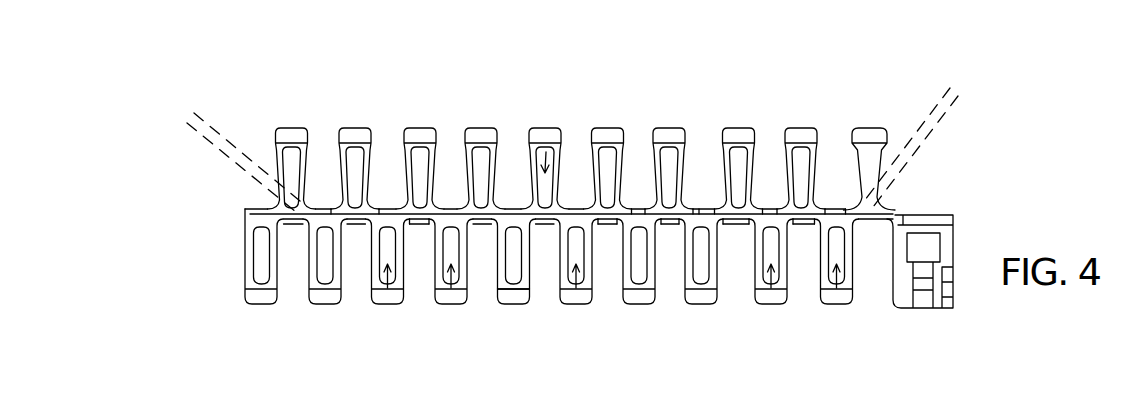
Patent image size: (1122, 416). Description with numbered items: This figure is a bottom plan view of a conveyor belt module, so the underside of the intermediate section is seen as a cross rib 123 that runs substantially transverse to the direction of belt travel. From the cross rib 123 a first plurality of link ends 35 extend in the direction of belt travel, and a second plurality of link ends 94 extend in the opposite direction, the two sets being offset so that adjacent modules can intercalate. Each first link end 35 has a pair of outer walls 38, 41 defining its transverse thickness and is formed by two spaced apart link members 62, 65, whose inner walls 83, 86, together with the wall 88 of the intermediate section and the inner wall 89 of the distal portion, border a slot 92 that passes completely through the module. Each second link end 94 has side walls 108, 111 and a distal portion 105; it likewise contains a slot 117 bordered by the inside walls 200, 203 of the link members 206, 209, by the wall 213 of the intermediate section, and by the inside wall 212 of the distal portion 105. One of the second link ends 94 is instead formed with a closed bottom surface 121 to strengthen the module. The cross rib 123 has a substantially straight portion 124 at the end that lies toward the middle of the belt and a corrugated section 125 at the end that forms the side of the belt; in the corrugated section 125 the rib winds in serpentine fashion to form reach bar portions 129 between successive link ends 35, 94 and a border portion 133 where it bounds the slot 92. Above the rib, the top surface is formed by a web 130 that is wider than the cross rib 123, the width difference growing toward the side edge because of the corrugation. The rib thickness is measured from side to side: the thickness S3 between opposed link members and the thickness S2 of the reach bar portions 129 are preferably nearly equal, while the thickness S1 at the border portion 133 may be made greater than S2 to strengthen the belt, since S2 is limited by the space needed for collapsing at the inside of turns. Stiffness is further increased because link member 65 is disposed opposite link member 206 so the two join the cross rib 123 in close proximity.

The first link ends 35 is at (323, 298).
The outer wall 38 is at (428, 224).
The outer wall 41 is at (467, 302).
The link member 62 is at (672, 226).
The link member 65 is at (654, 302).
The inner wall 83 is at (510, 304).
The inner wall 86 is at (528, 304).
The wall 88 is at (609, 224).
The inner wall 89 is at (575, 290).
The slot 92 is at (385, 289).
The second link ends 94 is at (354, 137).
The distal portion 105 is at (736, 130).
The side wall 108 is at (784, 188).
The side wall 111 is at (842, 212).
The slot 117 is at (546, 150).
The closed bottom surface 121 is at (880, 168).
The cross rib 123 is at (368, 212).
The substantially straight portion 124 is at (298, 216).
The corrugated section 125 is at (696, 208).
The reach bar portions 129 is at (738, 226).
The web 130 is at (255, 208).
The border portion 133 is at (716, 303).
The inside wall 200 is at (452, 208).
The inside wall 203 is at (481, 180).
The link member 206 is at (650, 208).
The link member 209 is at (766, 208).
The inside wall 212 is at (656, 130).
The wall 213 is at (590, 160).
The thickness of cross rib at border portion S1 is at (769, 290).
The thickness of reach bar portion S2 is at (960, 97).
The thickness of cross rib between opposed link members S3 is at (192, 121).